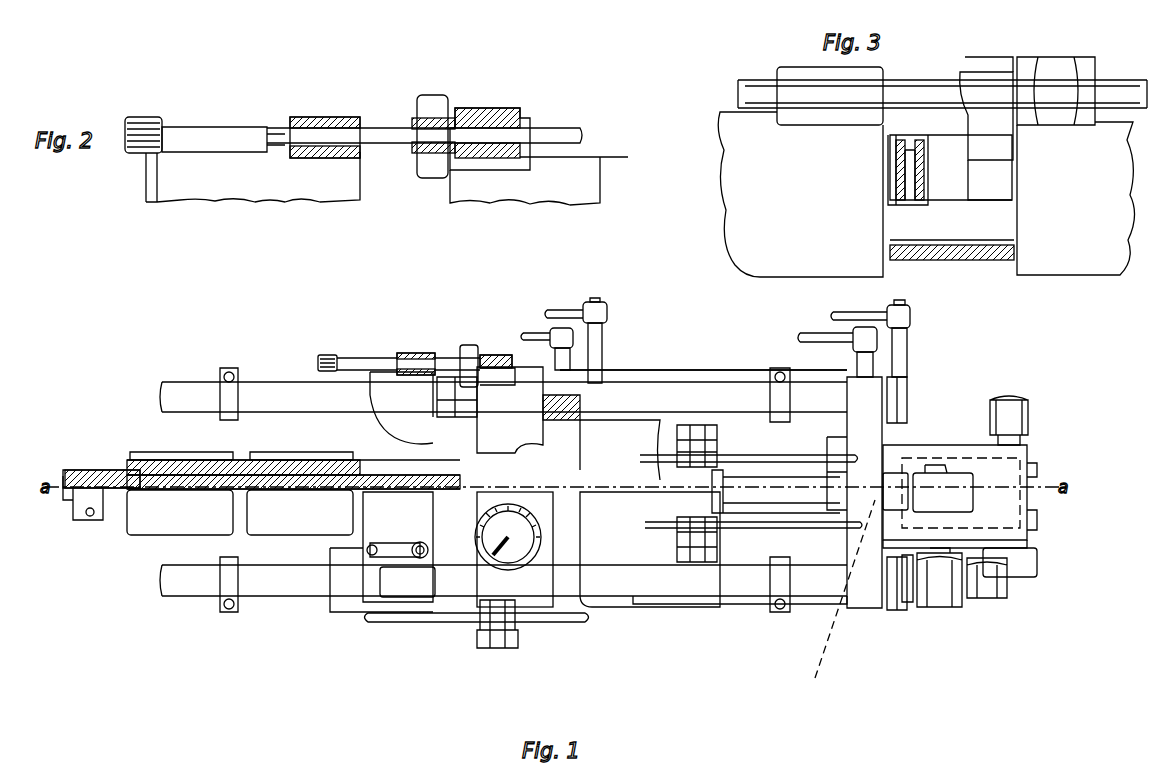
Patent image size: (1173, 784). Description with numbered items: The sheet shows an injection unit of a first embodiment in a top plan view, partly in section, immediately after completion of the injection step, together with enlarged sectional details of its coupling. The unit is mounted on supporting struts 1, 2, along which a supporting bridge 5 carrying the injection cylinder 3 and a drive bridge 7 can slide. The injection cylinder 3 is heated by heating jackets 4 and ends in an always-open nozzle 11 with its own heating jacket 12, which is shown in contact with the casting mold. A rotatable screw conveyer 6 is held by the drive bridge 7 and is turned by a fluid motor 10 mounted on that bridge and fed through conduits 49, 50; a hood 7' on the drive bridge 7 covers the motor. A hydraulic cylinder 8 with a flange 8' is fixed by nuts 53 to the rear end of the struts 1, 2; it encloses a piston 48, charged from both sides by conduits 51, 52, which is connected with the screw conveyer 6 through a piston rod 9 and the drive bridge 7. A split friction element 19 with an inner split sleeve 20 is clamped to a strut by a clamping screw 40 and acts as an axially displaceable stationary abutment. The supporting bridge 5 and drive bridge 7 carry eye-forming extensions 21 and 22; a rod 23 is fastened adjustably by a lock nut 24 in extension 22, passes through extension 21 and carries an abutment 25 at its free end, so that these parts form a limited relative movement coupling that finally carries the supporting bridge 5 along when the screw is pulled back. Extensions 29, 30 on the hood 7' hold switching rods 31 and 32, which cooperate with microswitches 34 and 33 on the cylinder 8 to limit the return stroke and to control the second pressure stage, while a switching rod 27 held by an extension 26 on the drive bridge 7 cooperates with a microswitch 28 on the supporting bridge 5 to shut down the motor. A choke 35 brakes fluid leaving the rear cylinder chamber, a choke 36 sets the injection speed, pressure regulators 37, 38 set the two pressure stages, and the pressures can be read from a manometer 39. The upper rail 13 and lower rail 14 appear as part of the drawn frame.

In FIG. 3, the supporting strut 1 is at (906, 227).
In FIG. 1, the supporting strut 1 is at (170, 390).
In FIG. 1, the supporting strut 2 is at (172, 598).
In FIG. 1, the injection cylinder 3 is at (182, 478).
In FIG. 1, the heating jackets 4 is at (280, 523).
In FIG. 2, the supporting bridge 5 is at (211, 183).
In FIG. 3, the supporting bridge 5 is at (760, 137).
In FIG. 1, the supporting bridge 5 is at (352, 597).
In FIG. 1, the screw conveyer 6 is at (247, 487).
In FIG. 2, the drive bridge 7 is at (539, 131).
In FIG. 3, the drive bridge 7 is at (1076, 218).
In FIG. 1, the drive bridge 7 is at (522, 601).
In FIG. 1, the hood 7' is at (650, 601).
In FIG. 1, the hydraulic cylinder 8 is at (988, 441).
In FIG. 1, the flange 8' is at (854, 543).
In FIG. 1, the piston rod 9 is at (745, 505).
In FIG. 1, the fluid motor 10 is at (615, 465).
In FIG. 1, the nozzle 11 is at (140, 483).
In FIG. 1, the heating jacket 12 is at (87, 503).
In FIG. 1, the upper rail 13 is at (670, 372).
In FIG. 1, the lower rail 14 is at (280, 600).
In FIG. 3, the split friction element 19 is at (966, 177).
In FIG. 1, the split friction element 19 is at (455, 377).
In FIG. 3, the split sleeve 20 is at (943, 248).
In FIG. 2, the extension 21 is at (305, 117).
In FIG. 3, the extension 21 is at (802, 75).
In FIG. 1, the extension 21 is at (423, 352).
In FIG. 2, the extension 22 is at (487, 108).
In FIG. 3, the extension 22 is at (1053, 107).
In FIG. 1, the extension 22 is at (497, 355).
In FIG. 2, the rod 23 is at (378, 133).
In FIG. 3, the rod 23 is at (750, 98).
In FIG. 1, the rod 23 is at (365, 358).
In FIG. 2, the lock nut 24 is at (433, 103).
In FIG. 3, the lock nut 24 is at (988, 143).
In FIG. 1, the lock nut 24 is at (470, 345).
In FIG. 2, the abutment 25 is at (140, 117).
In FIG. 1, the abutment 25 is at (325, 352).
In FIG. 1, the extension 26 is at (505, 648).
In FIG. 1, the switching rod 27 is at (388, 620).
In FIG. 1, the microswitch 28 is at (423, 597).
In FIG. 1, the extension 29 is at (683, 562).
In FIG. 1, the extension 30 is at (708, 425).
In FIG. 1, the switching rod 31 is at (742, 455).
In FIG. 1, the switching rod 32 is at (660, 540).
In FIG. 1, the microswitch 33 is at (897, 485).
In FIG. 1, the microswitch 34 is at (957, 485).
In FIG. 1, the choke 35 is at (1010, 410).
In FIG. 1, the choke 36 is at (985, 595).
In FIG. 1, the pressure regulator 37 is at (940, 600).
In FIG. 1, the pressure regulator 38 is at (915, 600).
In FIG. 1, the manometer 39 is at (1028, 577).
In FIG. 3, the clamping screw 40 is at (898, 173).
In FIG. 1, the piston 48 is at (839, 599).
In FIG. 1, the conduit 49 is at (570, 312).
In FIG. 1, the conduit 50 is at (530, 337).
In FIG. 1, the conduit 51 is at (860, 317).
In FIG. 1, the conduit 52 is at (815, 340).
In FIG. 1, the nuts 53 is at (903, 385).